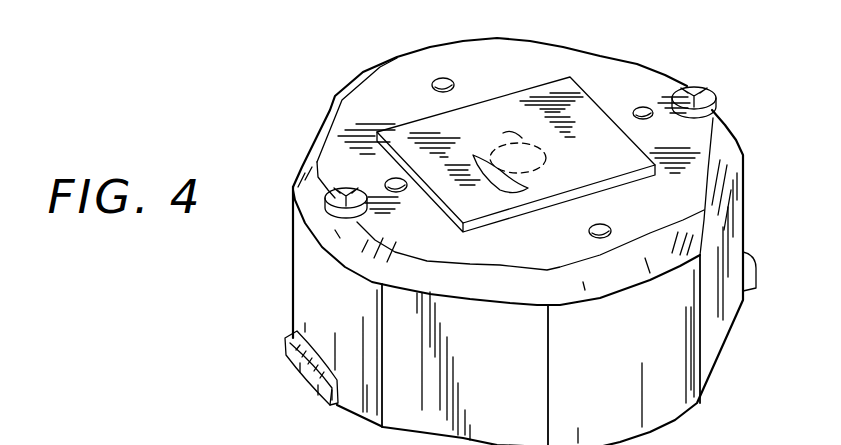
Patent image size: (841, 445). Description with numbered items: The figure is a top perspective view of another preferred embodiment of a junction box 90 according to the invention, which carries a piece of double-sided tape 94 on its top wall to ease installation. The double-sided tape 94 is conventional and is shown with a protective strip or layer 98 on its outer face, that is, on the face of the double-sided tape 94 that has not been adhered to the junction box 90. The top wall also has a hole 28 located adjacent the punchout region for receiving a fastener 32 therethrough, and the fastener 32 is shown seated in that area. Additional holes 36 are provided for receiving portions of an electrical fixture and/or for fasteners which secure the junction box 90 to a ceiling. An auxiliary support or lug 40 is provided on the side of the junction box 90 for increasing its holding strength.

The hole 28 is at (433, 78).
The fastener 32 is at (712, 87).
The additional holes 36 is at (513, 143).
The auxiliary support or lug 40 is at (290, 369).
The junction box 90 is at (281, 257).
The double-sided tape 94 is at (377, 134).
The protective strip or layer 98 is at (498, 170).